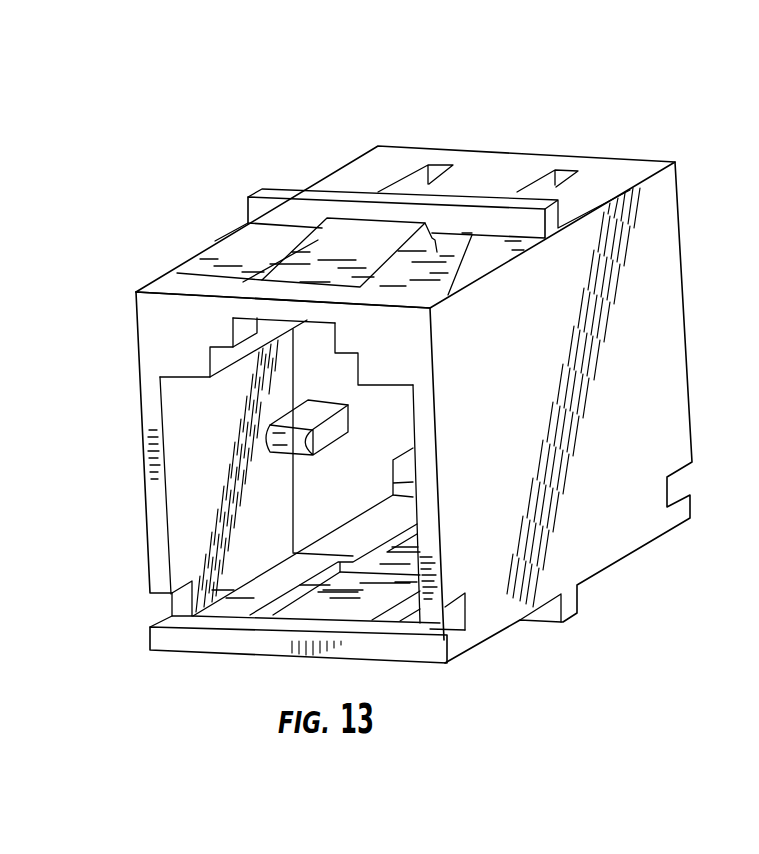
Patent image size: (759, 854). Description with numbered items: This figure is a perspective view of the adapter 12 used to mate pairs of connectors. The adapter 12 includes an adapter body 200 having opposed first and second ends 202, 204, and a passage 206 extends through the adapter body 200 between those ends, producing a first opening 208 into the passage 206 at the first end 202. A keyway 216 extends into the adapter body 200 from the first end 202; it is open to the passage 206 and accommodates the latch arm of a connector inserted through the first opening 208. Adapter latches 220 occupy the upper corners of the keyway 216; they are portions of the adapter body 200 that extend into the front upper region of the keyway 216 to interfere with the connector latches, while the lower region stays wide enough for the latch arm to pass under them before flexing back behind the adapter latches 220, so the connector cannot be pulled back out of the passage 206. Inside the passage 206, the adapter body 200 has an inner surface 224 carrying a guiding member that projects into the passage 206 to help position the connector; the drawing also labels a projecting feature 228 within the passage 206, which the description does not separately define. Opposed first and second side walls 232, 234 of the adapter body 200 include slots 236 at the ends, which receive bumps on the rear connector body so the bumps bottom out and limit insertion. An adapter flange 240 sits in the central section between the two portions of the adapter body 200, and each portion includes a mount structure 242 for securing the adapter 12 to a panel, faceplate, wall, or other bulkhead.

The adapter 12 is at (215, 138).
The adapter body 200 is at (391, 147).
The first end 202 is at (147, 313).
The second end 204 is at (680, 203).
The passage 206 is at (193, 439).
The first opening 208 is at (162, 512).
The keyway 216 is at (310, 351).
The adapter latch 220 is at (230, 328).
The inner surface 224 is at (185, 561).
The latch projection 228 is at (283, 417).
The first side wall 232 is at (142, 428).
The second side wall 234 is at (425, 482).
The slot 236 is at (168, 604).
The adapter flange 240 is at (290, 190).
The mount structure 242 is at (325, 239).